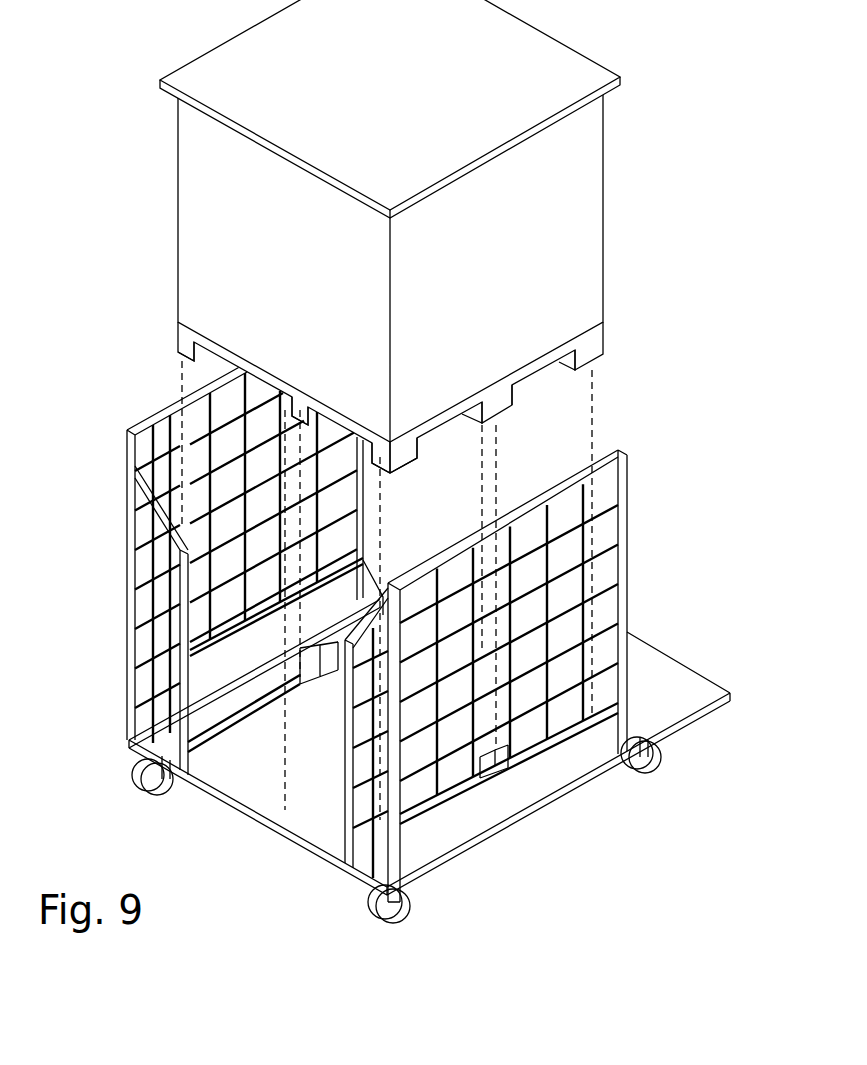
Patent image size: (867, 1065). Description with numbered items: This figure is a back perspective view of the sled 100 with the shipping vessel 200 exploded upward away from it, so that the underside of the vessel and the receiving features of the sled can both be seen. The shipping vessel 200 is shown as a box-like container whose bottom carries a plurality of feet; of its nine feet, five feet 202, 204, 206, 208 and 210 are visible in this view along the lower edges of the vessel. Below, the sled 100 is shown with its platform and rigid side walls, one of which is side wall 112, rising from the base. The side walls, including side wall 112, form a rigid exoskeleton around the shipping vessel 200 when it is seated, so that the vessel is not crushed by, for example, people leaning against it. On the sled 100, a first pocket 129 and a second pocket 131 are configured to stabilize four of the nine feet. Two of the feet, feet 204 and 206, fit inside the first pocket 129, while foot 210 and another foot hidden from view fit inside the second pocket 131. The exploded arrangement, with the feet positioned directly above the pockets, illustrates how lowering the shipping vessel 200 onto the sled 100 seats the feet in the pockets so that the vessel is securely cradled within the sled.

The sled 100 is at (428, 659).
The side wall 112 is at (622, 443).
The first pocket 129 is at (352, 870).
The second pocket 131 is at (240, 712).
The shipping vessel 200 is at (374, 258).
The foot 202 is at (607, 352).
The foot 204 is at (499, 414).
The foot 206 is at (394, 476).
The foot 208 is at (283, 412).
The foot 210 is at (180, 358).